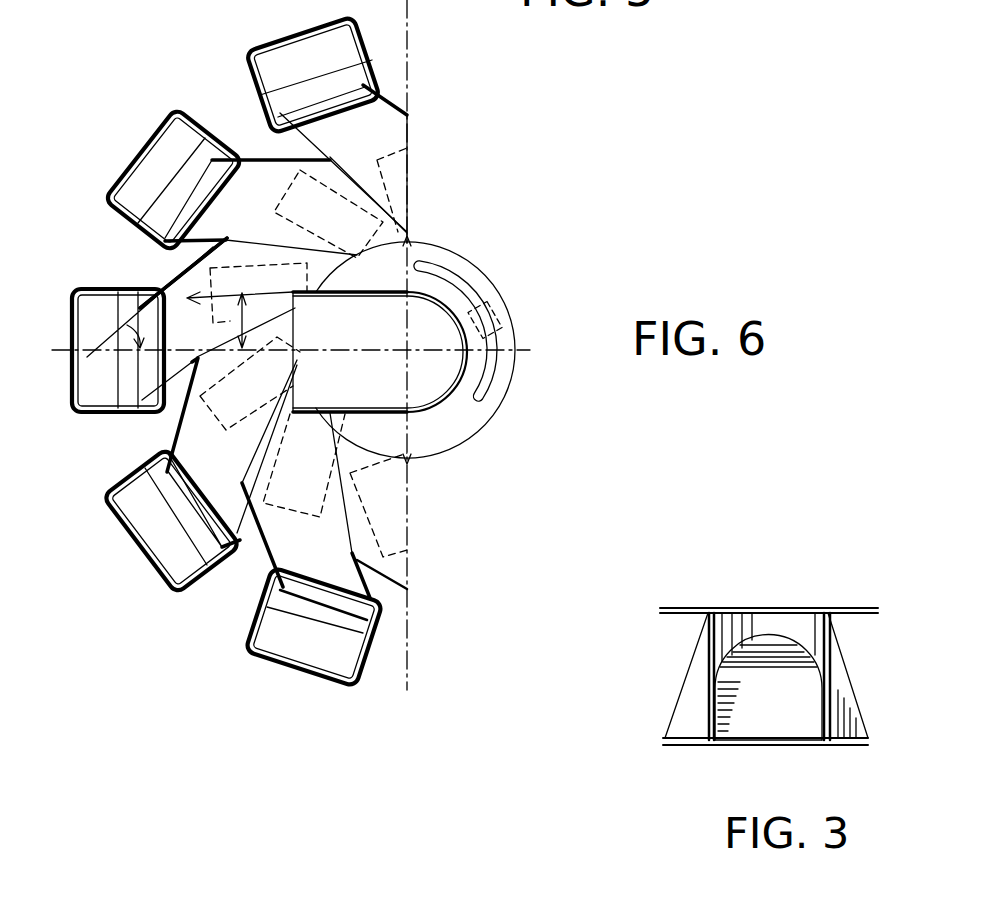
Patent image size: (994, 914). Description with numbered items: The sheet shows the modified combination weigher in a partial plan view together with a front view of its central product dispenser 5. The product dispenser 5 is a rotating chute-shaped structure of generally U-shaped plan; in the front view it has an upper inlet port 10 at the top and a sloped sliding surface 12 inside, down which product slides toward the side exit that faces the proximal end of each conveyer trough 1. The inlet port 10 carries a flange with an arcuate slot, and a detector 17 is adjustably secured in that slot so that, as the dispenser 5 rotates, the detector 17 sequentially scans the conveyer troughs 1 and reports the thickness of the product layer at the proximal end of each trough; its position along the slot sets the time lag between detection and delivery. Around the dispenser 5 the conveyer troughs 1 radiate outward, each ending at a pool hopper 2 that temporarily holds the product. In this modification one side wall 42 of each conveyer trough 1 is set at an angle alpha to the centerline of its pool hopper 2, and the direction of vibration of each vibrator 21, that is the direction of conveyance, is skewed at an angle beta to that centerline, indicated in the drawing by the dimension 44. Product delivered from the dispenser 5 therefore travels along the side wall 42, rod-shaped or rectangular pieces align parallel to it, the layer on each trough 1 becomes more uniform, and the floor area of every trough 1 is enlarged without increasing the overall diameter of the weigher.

In FIG. 6, the conveyer trough 1 is at (385, 113).
In FIG. 6, the pool hopper 2 is at (318, 28).
In FIG. 6, the product dispenser 5 is at (483, 428).
In FIG. 3, the product dispenser 5 is at (686, 582).
In FIG. 3, the upper inlet port 10 is at (766, 610).
In FIG. 3, the sloped sliding surface 12 is at (766, 741).
In FIG. 6, the detector 17 is at (503, 305).
In FIG. 6, the vibrator 21 is at (285, 204).
In FIG. 6, the side wall 42 is at (182, 278).
In FIG. 6, the blade adjustment region 44 is at (258, 282).